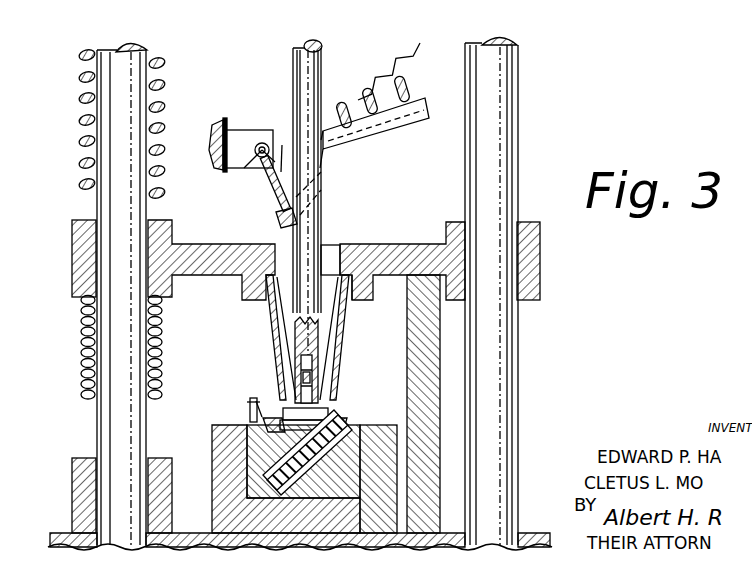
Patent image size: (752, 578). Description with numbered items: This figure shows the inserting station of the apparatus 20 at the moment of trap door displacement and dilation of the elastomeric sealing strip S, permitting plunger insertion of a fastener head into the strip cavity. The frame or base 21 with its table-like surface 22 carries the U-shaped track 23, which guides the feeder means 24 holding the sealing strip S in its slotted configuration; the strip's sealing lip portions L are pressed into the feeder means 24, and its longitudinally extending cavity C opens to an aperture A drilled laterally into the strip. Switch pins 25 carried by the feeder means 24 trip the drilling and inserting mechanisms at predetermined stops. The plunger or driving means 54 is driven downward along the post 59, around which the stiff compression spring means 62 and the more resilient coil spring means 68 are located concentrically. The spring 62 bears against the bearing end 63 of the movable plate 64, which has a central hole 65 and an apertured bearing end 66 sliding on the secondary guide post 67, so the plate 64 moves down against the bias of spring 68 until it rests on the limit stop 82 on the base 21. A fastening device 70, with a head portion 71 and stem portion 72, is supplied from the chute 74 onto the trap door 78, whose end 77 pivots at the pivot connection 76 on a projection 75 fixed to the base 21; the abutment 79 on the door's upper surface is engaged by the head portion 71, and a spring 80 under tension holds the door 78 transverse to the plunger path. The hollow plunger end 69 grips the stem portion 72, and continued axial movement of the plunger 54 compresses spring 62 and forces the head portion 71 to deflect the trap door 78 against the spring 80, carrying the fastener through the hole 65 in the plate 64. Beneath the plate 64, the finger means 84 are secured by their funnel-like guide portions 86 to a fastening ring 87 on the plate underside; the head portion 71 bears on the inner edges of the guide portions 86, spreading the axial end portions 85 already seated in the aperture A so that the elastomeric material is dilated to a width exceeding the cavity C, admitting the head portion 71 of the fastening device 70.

The apparatus 20 is at (525, 366).
The frame or base 21 is at (74, 536).
The table-like surface 22 is at (204, 534).
The U-shaped track 23 is at (212, 442).
The feeder means 24 is at (357, 427).
The switch pins 25 is at (250, 411).
The plunger or driving means 54 is at (315, 40).
The post 59 is at (131, 42).
The compression spring means 62 is at (93, 48).
The bearing end 63 is at (76, 227).
The movable plate 64 is at (395, 244).
The hole 65 is at (338, 248).
The apertured bearing end 66 is at (531, 231).
The secondary guide post 67 is at (508, 48).
The coil spring means 68 is at (81, 360).
The plunger end 69 is at (340, 345).
The fastening device 70 is at (410, 92).
The head portion 71 is at (323, 380).
The stem portion 72 is at (300, 382).
The chute 74 is at (430, 123).
The projection 75 is at (232, 132).
The pivot connection 76 is at (257, 162).
The end of trap door 77 is at (262, 143).
The trap door 78 is at (272, 207).
The abutment 79 is at (282, 145).
The spring 80 is at (410, 50).
The limit stop 82 is at (425, 290).
The finger means 84 is at (272, 315).
The axial end portions 85 is at (280, 408).
The funnel-like guide portions 86 is at (258, 298).
The fastening ring 87 is at (357, 290).
The sealing strip S is at (255, 400).
The aperture A is at (319, 403).
The cavity C is at (282, 450).
The sealing lip portions L is at (297, 480).